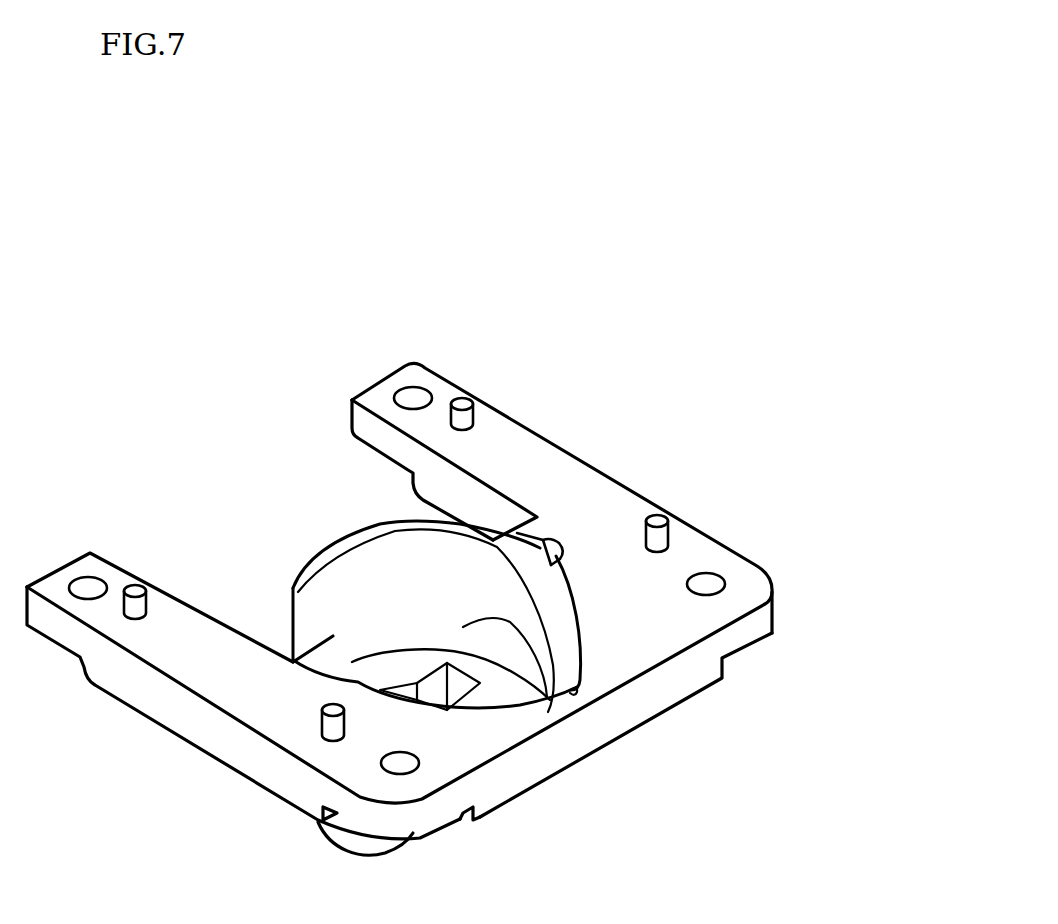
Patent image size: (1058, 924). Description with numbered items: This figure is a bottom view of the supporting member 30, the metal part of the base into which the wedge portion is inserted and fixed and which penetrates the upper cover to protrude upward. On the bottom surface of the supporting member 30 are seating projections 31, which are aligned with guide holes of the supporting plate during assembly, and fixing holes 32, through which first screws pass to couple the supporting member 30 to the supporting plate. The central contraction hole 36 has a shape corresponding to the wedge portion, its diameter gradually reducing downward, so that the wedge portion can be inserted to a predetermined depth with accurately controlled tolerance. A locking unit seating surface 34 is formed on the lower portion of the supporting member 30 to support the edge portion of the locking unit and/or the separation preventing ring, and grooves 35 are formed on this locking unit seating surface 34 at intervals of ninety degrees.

The supporting member 30 is at (652, 300).
The seating projection 31 is at (459, 393).
The fixing hole 32 is at (410, 398).
The locking unit seating surface 34 is at (577, 583).
The grooves 35 is at (559, 545).
The contraction hole 36 is at (546, 688).